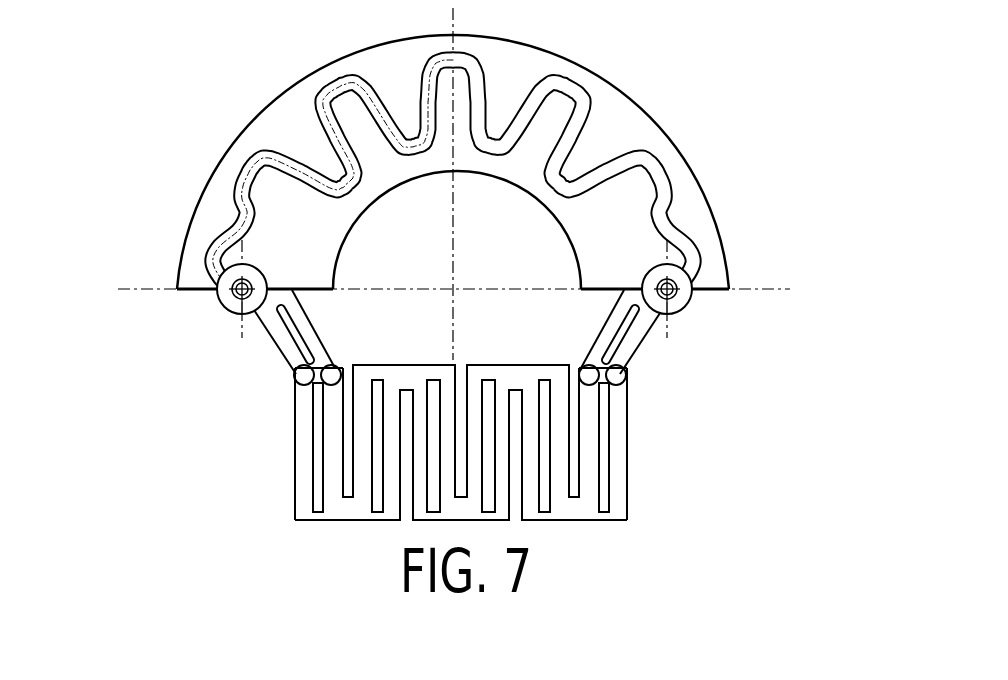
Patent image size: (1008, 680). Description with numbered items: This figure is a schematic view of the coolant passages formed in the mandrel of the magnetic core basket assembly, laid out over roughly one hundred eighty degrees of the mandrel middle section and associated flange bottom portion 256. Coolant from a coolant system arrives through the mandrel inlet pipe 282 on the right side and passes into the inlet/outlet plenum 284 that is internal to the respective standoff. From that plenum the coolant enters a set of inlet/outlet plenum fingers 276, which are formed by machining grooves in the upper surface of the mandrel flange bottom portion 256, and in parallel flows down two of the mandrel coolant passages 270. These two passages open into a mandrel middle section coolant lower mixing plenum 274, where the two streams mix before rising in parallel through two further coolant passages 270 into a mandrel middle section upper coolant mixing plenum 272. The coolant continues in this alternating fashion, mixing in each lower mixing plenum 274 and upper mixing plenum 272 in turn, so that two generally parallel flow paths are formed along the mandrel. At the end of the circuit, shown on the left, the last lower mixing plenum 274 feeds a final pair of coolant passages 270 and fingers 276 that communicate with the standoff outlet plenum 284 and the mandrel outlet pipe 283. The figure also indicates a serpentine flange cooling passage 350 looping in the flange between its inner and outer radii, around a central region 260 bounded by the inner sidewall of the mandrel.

The serpentine heating element 350 is at (590, 88).
The mandrel flange bottom portion 256 is at (690, 207).
The central opening 260 is at (447, 255).
The mandrel coolant passages 270 is at (304, 447).
The mandrel middle section upper coolant mixing plenum 272 is at (520, 386).
The mandrel middle section coolant lower mixing plenum 274 is at (574, 512).
The inlet/outlet plenum fingers 276 is at (280, 344).
The mandrel inlet pipe 282 is at (692, 293).
The mandrel outlet pipe 283 is at (219, 295).
The inlet/outlet plenum 284 is at (232, 312).